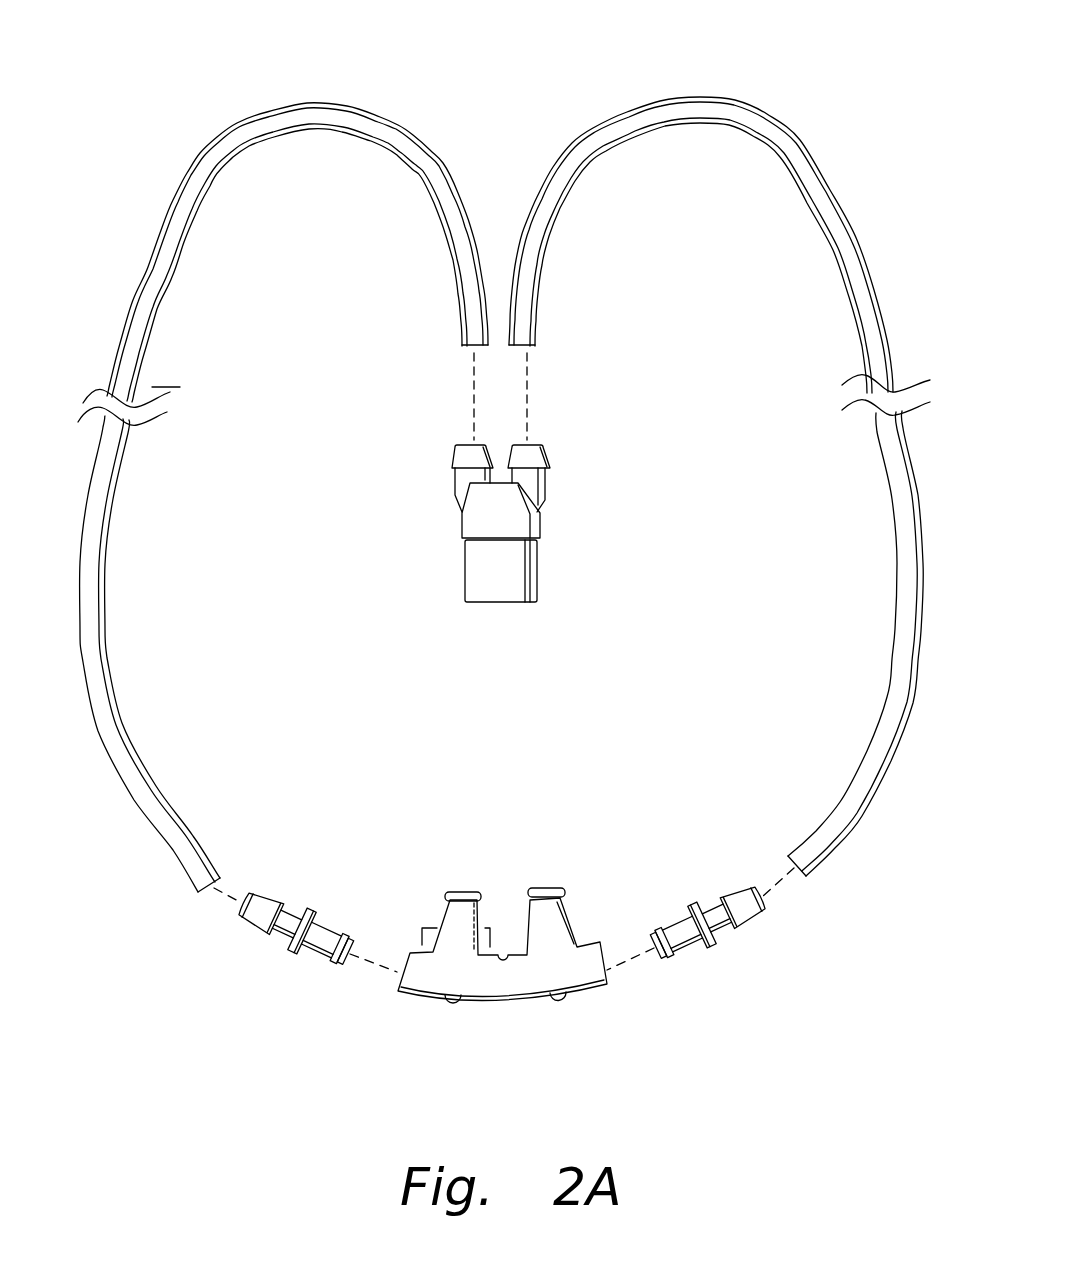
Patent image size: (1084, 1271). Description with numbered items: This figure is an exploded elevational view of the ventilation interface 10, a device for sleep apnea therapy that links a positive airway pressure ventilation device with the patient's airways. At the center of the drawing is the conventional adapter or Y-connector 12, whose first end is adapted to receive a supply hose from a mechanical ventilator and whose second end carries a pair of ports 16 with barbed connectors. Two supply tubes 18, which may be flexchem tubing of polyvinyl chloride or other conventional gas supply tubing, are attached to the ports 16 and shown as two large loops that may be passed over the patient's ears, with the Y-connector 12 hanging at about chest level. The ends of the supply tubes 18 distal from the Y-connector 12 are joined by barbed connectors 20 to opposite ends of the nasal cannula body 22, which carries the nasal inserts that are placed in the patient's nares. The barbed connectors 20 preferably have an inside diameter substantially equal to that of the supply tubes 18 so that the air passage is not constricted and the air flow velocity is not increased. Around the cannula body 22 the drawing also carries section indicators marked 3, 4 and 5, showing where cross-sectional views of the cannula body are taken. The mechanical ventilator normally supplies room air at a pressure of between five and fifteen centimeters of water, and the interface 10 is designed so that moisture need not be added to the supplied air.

The ventilation interface 10 is at (215, 85).
The Y-connector 12 is at (540, 527).
The ports 16 is at (455, 474).
The supply tubes 18 is at (455, 277).
The barbed connectors 20 is at (325, 923).
The nasal cannula body 22 is at (455, 918).
The section line 3- 3 is at (502, 953).
The section line 4- 4 is at (543, 887).
The section line 5- 5 is at (486, 1014).